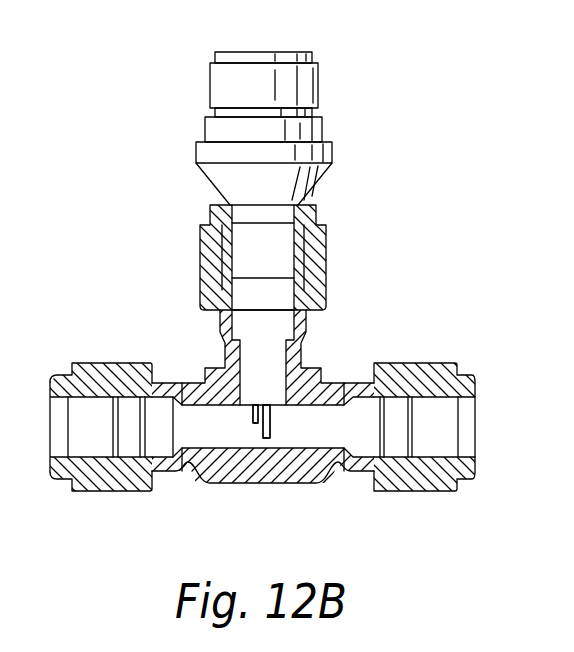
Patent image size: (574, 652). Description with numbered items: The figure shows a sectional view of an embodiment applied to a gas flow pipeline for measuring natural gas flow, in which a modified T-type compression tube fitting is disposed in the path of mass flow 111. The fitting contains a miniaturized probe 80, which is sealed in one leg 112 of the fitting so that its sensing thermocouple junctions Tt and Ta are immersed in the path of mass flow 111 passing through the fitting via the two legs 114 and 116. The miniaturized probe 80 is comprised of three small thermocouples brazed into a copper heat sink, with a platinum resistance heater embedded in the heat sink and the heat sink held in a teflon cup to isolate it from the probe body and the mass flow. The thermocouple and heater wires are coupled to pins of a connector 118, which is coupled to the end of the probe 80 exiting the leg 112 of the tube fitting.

The path of mass flow 111 is at (490, 427).
The miniaturized probe 80 is at (260, 343).
The leg of tube fitting 112 is at (328, 240).
The connector 118 is at (271, 53).
The leg of tube fitting 116 is at (97, 363).
The leg of tube fitting 114 is at (433, 363).
The sensing thermocouple junction Tt is at (256, 418).
The sensing thermocouple junction Ta is at (271, 421).